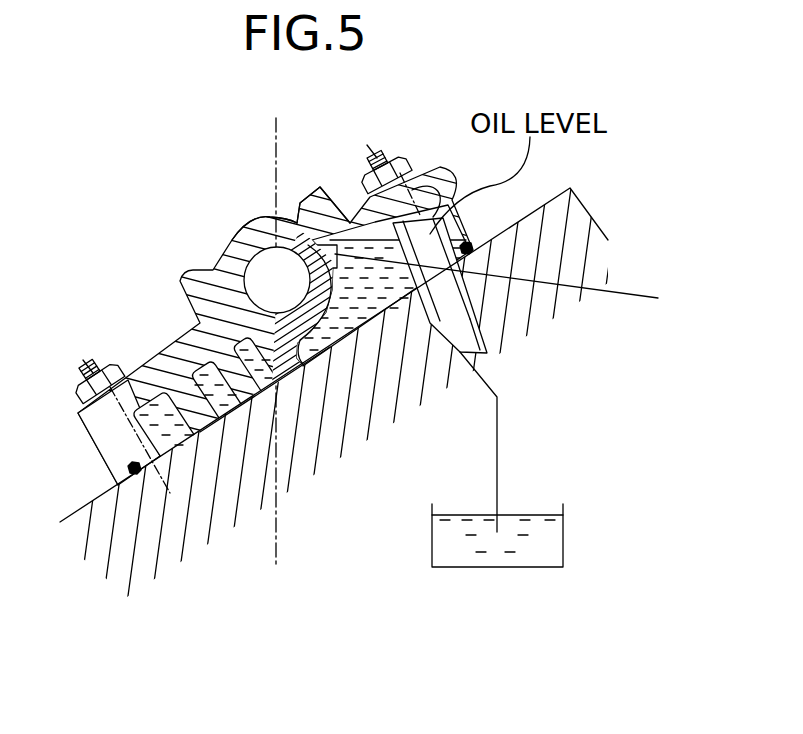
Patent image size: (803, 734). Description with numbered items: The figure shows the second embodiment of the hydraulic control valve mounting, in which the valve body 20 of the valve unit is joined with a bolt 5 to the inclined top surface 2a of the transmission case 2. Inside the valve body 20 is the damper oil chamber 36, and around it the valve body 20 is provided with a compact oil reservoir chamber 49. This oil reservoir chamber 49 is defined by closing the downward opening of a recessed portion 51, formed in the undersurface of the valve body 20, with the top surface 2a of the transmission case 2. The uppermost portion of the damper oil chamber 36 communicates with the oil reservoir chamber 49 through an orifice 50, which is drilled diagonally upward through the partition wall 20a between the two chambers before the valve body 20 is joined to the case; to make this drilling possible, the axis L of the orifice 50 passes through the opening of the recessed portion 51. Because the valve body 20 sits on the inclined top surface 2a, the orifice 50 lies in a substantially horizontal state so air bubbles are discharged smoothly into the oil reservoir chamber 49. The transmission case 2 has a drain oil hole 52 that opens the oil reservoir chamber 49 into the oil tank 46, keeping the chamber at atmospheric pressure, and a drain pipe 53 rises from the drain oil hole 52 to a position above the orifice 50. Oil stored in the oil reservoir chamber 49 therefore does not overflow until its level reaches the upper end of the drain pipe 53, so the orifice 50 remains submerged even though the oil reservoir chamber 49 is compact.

The transmission case 2 is at (222, 502).
The top surface 2a is at (544, 200).
The bolt 5 is at (92, 376).
The valve body 20 is at (192, 290).
The partition wall 20a is at (350, 333).
The damper oil chamber 36 is at (256, 256).
The oil tank 46 is at (535, 567).
The oil reservoir chamber 49 is at (353, 205).
The orifice 50 is at (297, 220).
The recessed portion 51 is at (440, 215).
The drain oil hole 52 is at (458, 352).
The drain pipe 53 is at (455, 298).
The axis of the orifice L is at (647, 294).